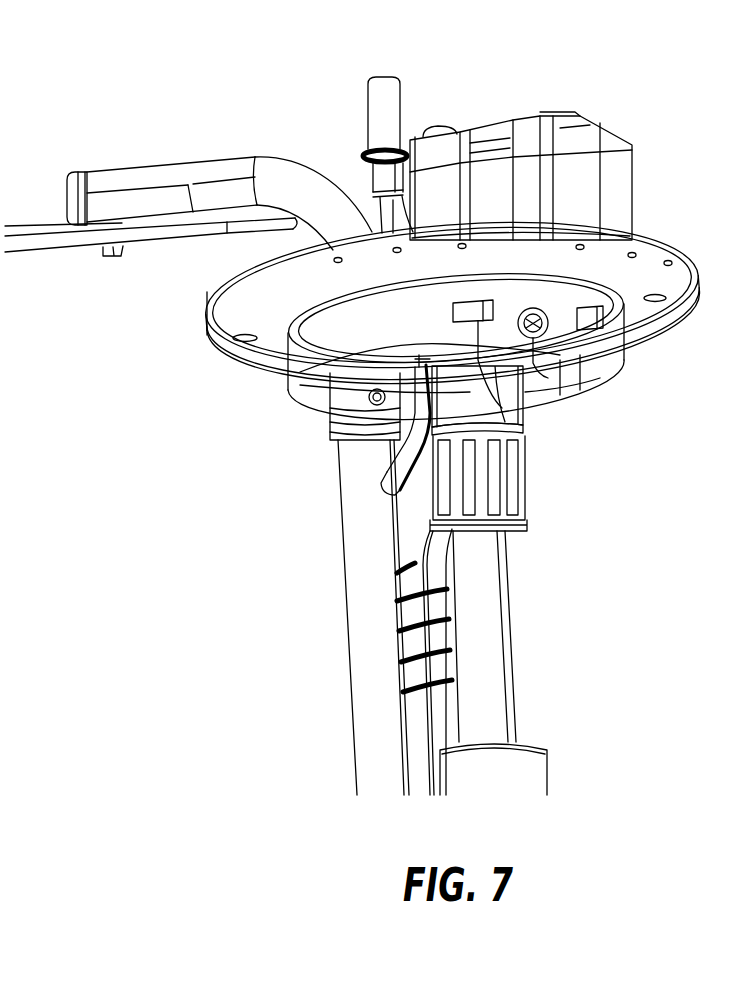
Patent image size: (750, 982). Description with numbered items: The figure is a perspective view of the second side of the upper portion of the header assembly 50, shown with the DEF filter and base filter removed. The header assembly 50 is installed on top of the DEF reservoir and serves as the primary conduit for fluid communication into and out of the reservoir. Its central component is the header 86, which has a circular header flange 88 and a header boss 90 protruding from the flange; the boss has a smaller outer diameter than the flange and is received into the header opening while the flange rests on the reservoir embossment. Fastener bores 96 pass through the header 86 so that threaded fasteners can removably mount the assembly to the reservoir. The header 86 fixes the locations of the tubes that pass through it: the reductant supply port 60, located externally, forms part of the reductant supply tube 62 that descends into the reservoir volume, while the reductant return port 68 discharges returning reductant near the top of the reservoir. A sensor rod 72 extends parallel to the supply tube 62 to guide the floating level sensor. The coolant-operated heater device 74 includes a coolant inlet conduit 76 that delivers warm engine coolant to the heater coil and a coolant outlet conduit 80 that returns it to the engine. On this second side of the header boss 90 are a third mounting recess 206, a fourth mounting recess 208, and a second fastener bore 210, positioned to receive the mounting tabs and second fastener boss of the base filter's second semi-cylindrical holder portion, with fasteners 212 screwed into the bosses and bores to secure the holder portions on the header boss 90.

The header assembly 50 is at (446, 61).
The reductant supply port 60 is at (368, 108).
The reductant supply tube 62 is at (385, 484).
The reductant return port 68 is at (437, 125).
The sensor rod 72 is at (495, 652).
The heater device 74 is at (362, 668).
The coolant inlet conduit 76 is at (155, 172).
The coolant outlet conduit 80 is at (185, 240).
The header 86 is at (665, 250).
The header flange 88 is at (225, 309).
The header boss 90 is at (322, 353).
The fastener bores 96 is at (235, 342).
The third mounting recess 206 is at (518, 403).
The fourth mounting recess 208 is at (628, 334).
The second fastener bore 210 is at (552, 333).
The fasteners 212 is at (572, 396).